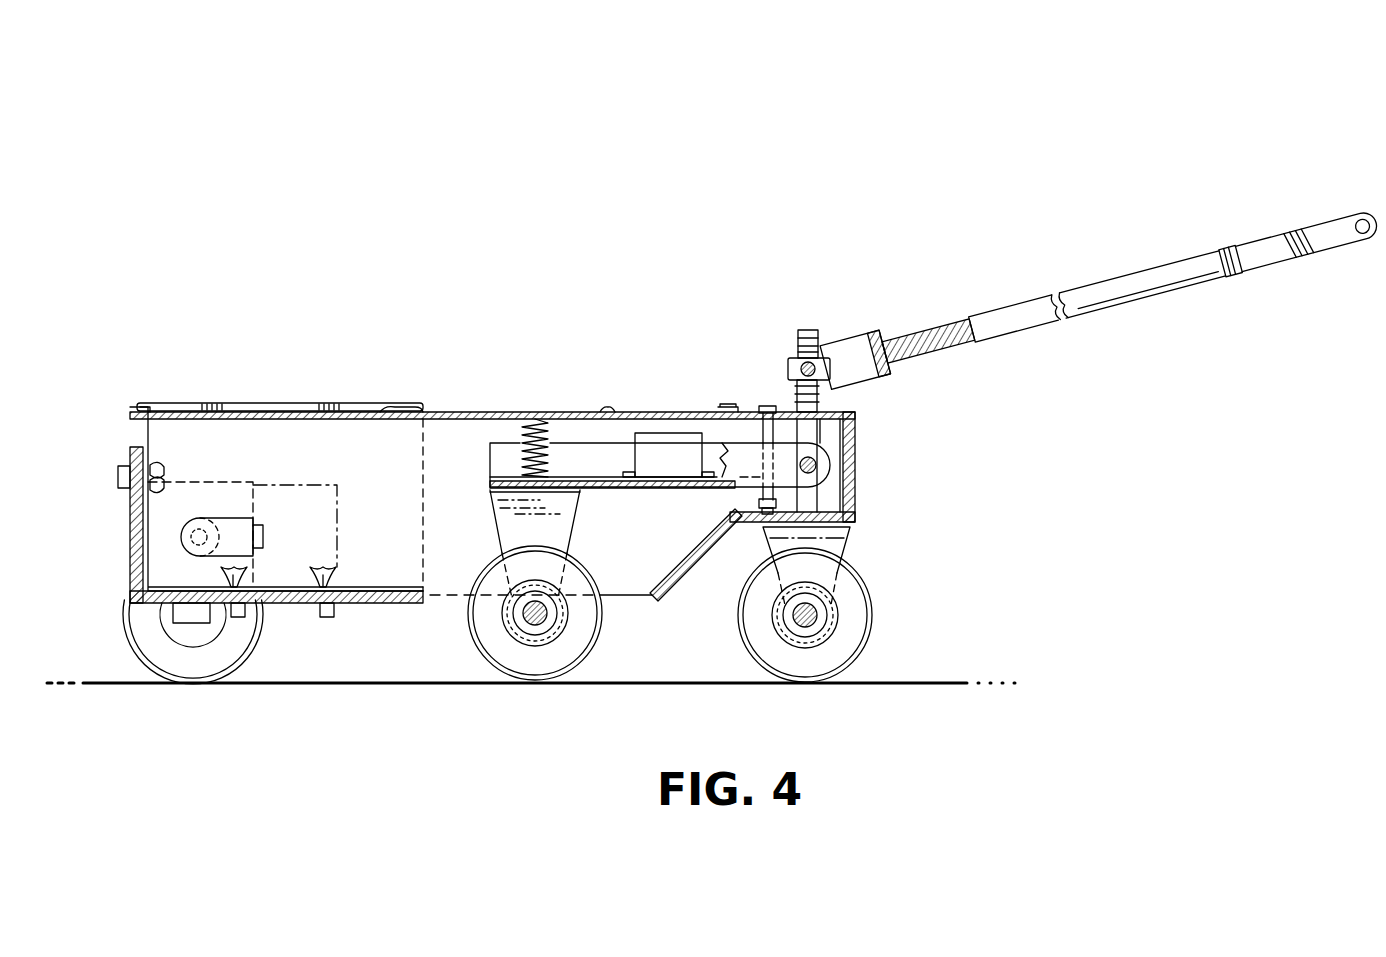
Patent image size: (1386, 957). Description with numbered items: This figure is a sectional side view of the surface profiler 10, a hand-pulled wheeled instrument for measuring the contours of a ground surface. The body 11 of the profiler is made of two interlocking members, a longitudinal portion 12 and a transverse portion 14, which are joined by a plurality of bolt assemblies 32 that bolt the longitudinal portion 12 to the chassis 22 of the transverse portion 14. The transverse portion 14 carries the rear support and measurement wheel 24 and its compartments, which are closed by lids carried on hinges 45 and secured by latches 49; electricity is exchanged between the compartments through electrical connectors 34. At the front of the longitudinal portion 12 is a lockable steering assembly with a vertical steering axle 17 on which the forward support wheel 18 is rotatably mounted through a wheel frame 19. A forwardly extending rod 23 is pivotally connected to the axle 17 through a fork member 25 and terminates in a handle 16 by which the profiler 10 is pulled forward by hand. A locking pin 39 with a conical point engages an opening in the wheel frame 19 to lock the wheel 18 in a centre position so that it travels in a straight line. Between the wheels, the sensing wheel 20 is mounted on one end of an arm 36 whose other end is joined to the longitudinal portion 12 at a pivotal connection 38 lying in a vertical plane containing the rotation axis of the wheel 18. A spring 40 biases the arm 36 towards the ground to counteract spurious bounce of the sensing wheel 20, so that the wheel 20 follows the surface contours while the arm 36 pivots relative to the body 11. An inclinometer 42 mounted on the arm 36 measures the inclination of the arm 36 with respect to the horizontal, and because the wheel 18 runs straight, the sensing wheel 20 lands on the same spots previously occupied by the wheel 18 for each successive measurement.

The surface profiler 10 is at (452, 251).
The body 11 is at (292, 362).
The longitudinal portion 12 is at (456, 402).
The transverse portion 14 is at (120, 548).
The handle 16 is at (1313, 228).
The vertical steering axle 17 is at (810, 330).
The forward support wheel 18 is at (871, 619).
The wheel frame 19 is at (851, 546).
The sensing wheel 20 is at (594, 647).
The chassis 22 is at (130, 514).
The forwardly extending rod 23 is at (1008, 312).
The rear support and measurement wheel 24 is at (246, 652).
The fork member 25 is at (863, 340).
The bolt assemblies 32 is at (120, 478).
The electrical connectors 34 is at (186, 540).
The arm 36 is at (600, 462).
The pivotal connection 38 is at (816, 470).
The locking pin 39 is at (768, 406).
The spring 40 is at (522, 432).
The inclinometer 42 is at (668, 433).
The hinges 45 is at (397, 410).
The latches 49 is at (150, 407).